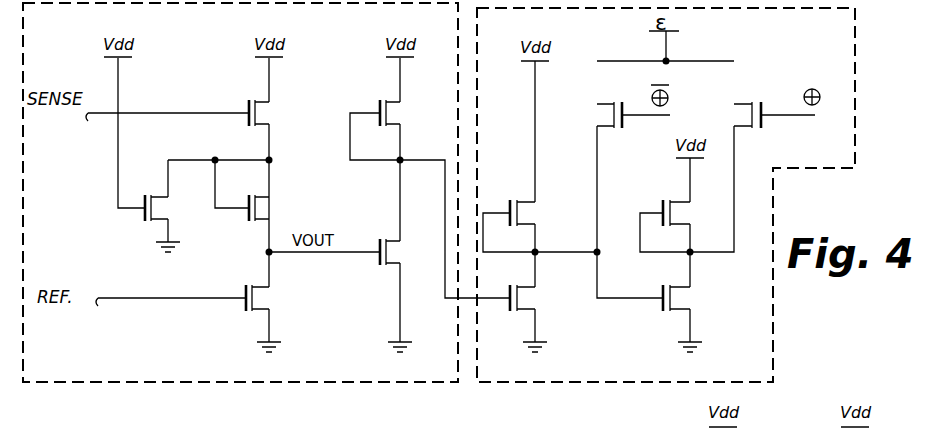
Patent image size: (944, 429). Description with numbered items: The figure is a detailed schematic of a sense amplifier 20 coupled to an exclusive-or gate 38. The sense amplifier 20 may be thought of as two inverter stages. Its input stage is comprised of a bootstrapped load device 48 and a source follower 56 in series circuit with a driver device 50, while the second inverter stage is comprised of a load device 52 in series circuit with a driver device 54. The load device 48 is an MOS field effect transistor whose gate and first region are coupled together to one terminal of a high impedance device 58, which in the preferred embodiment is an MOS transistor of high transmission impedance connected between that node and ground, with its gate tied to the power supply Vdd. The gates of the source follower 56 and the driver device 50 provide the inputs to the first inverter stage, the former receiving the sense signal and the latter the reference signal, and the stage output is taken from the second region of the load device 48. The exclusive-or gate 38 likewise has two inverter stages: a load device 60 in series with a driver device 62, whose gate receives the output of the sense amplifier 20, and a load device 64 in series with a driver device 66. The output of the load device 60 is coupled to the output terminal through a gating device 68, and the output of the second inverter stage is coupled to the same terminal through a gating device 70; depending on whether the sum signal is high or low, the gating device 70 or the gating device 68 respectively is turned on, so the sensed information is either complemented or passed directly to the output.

The sense amplifier 20 is at (192, 389).
The exclusive-or gate 38 is at (588, 384).
The bootstrapped load device 48 is at (258, 210).
The driver device 50 is at (258, 302).
The load device 52 is at (390, 104).
The driver device 54 is at (390, 242).
The source follower 56 is at (258, 101).
The high impedance device 58 is at (158, 200).
The load device 60 is at (522, 204).
The driver device 62 is at (522, 289).
The load device 64 is at (675, 204).
The driver device 66 is at (675, 289).
The gating device 68 is at (604, 130).
The gating device 70 is at (740, 130).